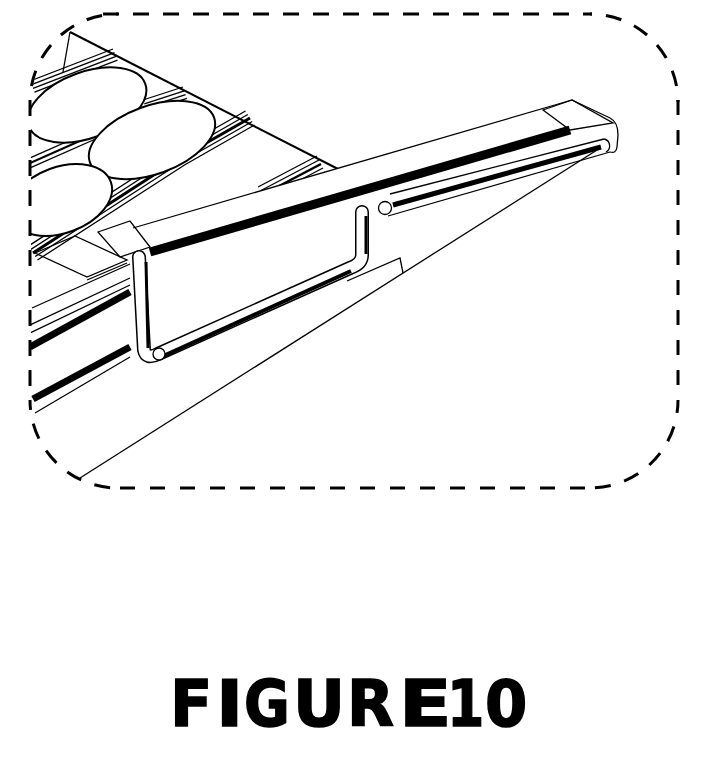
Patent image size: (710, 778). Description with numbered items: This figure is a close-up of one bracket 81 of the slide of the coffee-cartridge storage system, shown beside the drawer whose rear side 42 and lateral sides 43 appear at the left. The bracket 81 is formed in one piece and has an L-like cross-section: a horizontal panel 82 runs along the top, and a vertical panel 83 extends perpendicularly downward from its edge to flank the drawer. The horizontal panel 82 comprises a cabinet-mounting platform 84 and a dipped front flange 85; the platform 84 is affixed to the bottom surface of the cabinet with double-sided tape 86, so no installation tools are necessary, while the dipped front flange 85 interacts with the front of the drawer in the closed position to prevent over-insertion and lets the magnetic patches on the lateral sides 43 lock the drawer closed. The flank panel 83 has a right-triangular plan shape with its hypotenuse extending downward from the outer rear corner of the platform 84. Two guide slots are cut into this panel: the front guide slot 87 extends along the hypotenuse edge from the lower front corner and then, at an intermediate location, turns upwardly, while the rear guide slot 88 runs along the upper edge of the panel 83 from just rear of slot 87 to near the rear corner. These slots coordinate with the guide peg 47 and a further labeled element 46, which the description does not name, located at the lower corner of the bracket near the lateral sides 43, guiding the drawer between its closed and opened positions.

The rear side 42 is at (250, 118).
The lateral sides 43 is at (252, 284).
The pin 46 is at (166, 360).
The guide peg 47 is at (396, 212).
The bracket 81 is at (592, 112).
The horizontal panel 82 is at (363, 160).
The vertical panel 83 is at (500, 204).
The cabinet-mounting platform 84 is at (578, 115).
The dipped front flange 85 is at (81, 258).
The double-sided tape 86 is at (352, 164).
The front guide slot 87 is at (340, 283).
The rear guide slot 88 is at (593, 155).